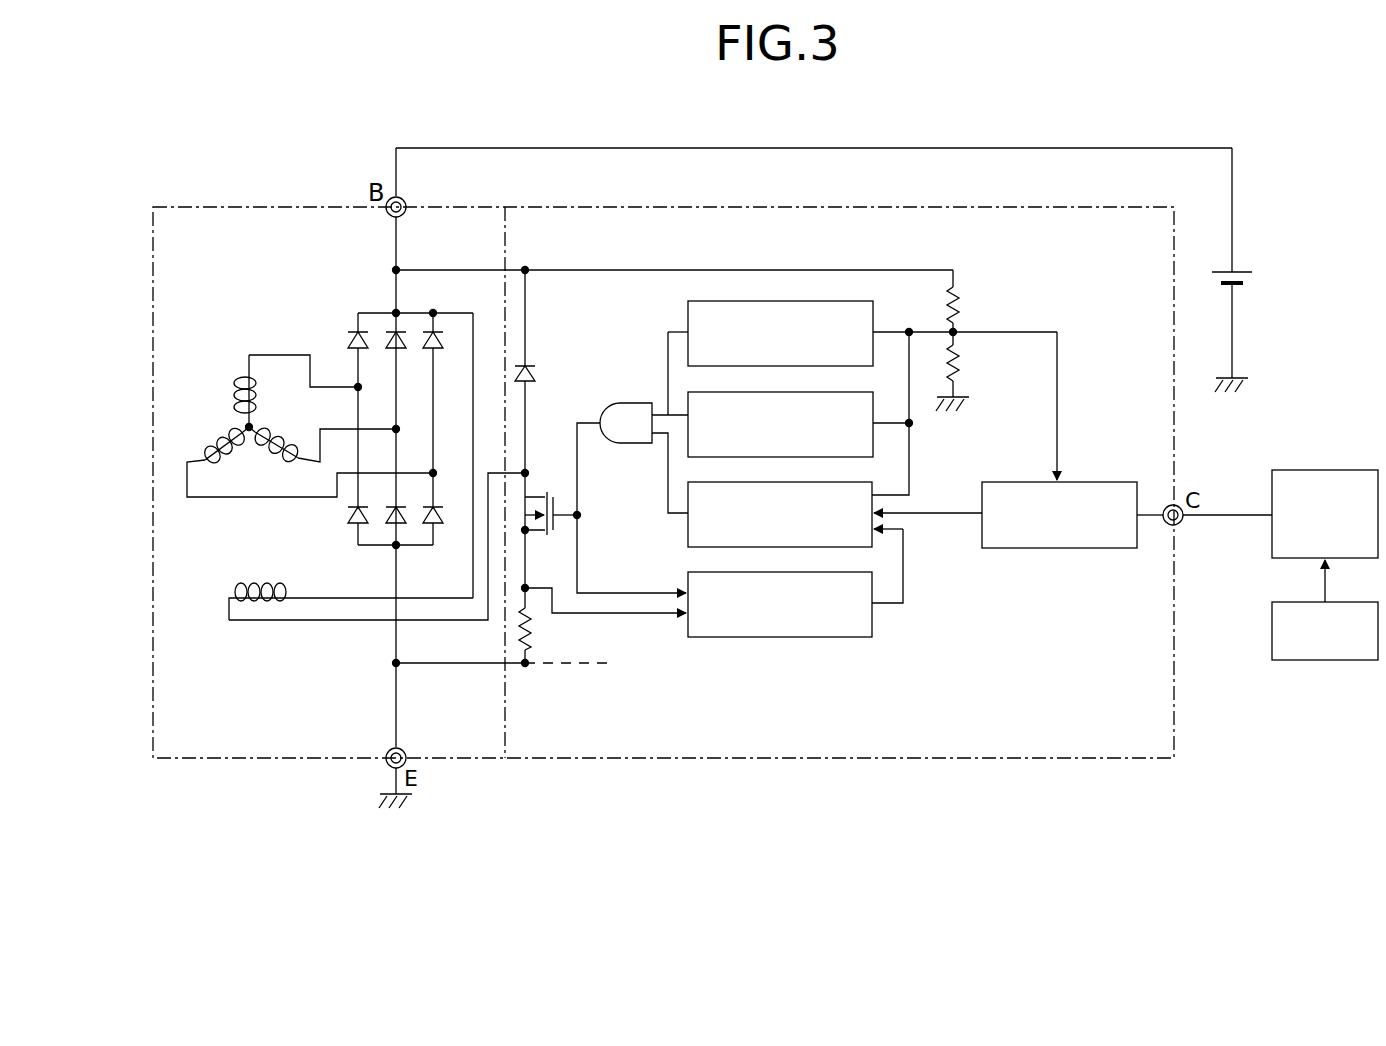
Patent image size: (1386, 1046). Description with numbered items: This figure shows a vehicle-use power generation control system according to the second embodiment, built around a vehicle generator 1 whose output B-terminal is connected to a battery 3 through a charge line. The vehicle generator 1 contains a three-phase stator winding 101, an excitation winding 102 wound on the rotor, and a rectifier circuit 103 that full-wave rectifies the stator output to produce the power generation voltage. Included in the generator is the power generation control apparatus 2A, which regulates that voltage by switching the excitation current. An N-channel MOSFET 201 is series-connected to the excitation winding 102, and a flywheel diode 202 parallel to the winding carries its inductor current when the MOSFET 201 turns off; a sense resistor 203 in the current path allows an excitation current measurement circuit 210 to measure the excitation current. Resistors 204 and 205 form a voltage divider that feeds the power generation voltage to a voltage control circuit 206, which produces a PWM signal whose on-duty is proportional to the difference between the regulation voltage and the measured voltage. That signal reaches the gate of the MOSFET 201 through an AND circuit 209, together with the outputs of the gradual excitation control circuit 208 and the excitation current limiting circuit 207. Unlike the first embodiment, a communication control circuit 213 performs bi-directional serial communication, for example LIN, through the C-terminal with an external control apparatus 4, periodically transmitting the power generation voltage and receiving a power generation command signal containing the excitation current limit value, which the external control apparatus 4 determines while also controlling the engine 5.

The vehicle generator 1 is at (174, 206).
The power generation control apparatus 2A is at (1115, 192).
The battery 3 is at (1243, 270).
The external control apparatus 4 is at (1270, 548).
The engine 5 is at (1270, 635).
The stator winding 101 is at (247, 426).
The excitation winding 102 is at (247, 591).
The rectifier circuit 103 is at (378, 313).
The MOSFET 201 is at (530, 497).
The flywheel diode 202 is at (528, 366).
The sense resistor 203 is at (532, 628).
The resistor 204 is at (960, 305).
The resistor 205 is at (960, 365).
The voltage control circuit 206 is at (688, 312).
The excitation current limiting circuit 207 is at (875, 488).
The gradual excitation control circuit 208 is at (873, 438).
The AND circuit 209 is at (623, 403).
The excitation current measurement circuit 210 is at (688, 580).
The communication control circuit 213 is at (1093, 481).